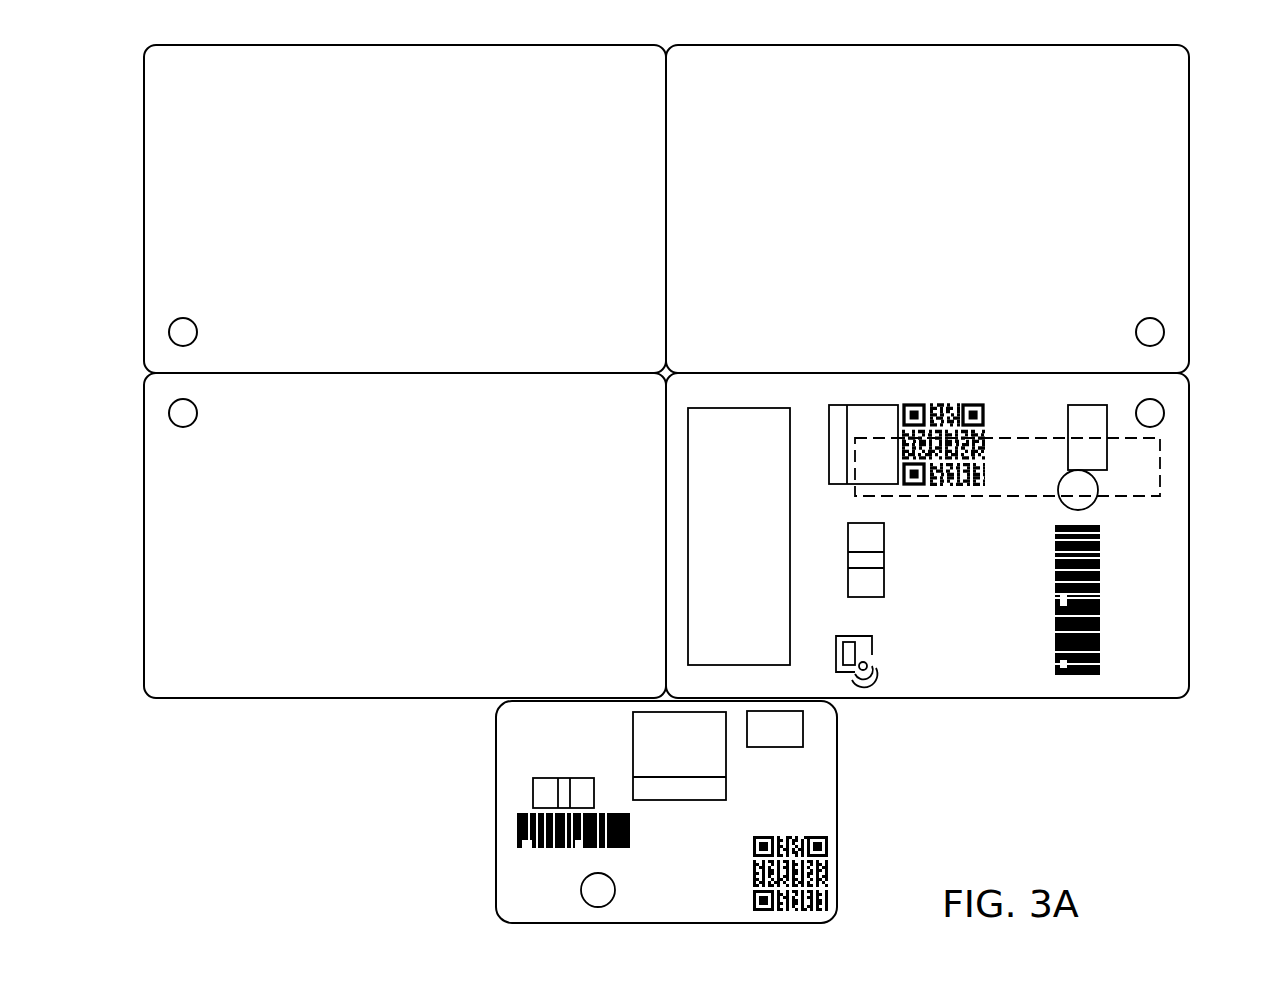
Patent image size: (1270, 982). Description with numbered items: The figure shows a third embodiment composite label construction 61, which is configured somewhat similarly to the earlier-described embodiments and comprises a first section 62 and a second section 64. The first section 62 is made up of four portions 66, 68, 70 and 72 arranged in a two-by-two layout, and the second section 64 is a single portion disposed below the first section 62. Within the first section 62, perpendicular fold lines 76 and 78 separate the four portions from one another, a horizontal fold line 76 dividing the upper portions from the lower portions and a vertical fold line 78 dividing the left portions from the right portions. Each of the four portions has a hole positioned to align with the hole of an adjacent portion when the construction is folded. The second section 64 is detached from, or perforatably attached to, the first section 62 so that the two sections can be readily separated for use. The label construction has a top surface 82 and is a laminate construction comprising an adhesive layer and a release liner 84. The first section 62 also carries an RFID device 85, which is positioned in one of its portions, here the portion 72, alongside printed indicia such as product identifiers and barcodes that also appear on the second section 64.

The composite label construction 61 is at (788, 36).
The first section 62 is at (927, 38).
The second section 64 is at (478, 808).
The portion 66 is at (158, 152).
The portion 68 is at (1175, 152).
The portion 70 is at (158, 477).
The portion 72 is at (1178, 577).
The fold line 76 is at (406, 372).
The fold line 78 is at (668, 214).
The top surface 82 is at (1165, 115).
The release liner 84 is at (1014, 784).
The RFID device 85 is at (1160, 455).